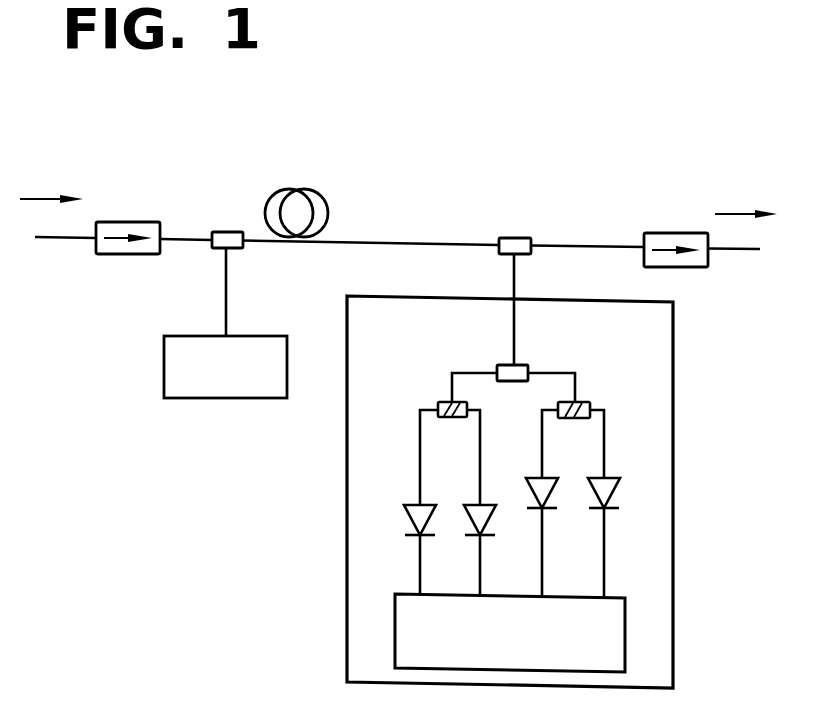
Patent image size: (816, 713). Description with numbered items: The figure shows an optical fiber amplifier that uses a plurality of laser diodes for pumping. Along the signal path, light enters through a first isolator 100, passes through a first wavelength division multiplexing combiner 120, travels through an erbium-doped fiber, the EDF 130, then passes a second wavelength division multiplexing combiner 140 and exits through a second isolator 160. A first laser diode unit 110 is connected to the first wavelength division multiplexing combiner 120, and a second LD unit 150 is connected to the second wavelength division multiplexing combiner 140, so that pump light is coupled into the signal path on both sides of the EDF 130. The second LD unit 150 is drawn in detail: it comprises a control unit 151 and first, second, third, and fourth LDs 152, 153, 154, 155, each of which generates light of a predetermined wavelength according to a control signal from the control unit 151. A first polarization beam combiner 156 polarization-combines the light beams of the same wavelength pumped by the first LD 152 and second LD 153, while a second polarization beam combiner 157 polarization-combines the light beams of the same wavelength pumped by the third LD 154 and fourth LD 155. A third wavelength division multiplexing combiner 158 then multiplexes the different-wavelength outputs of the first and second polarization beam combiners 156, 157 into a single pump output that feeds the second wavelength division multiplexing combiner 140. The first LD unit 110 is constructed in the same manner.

The first isolator 100 is at (102, 255).
The first laser diode unit 110 is at (202, 398).
The first wavelength division multiplexing combiner 120 is at (228, 232).
The EDF 130 is at (328, 212).
The second wavelength division multiplexing combiner 140 is at (526, 238).
The second LD unit 150 is at (673, 498).
The control unit 151 is at (625, 637).
The first LD 152 is at (410, 502).
The second LD 153 is at (473, 502).
The third LD 154 is at (548, 510).
The fourth LD 155 is at (610, 510).
The first polarization beam combiner 156 is at (448, 400).
The second polarization beam combiner 157 is at (578, 402).
The third wavelength division multiplexing combiner 158 is at (517, 365).
The second isolator 160 is at (676, 233).